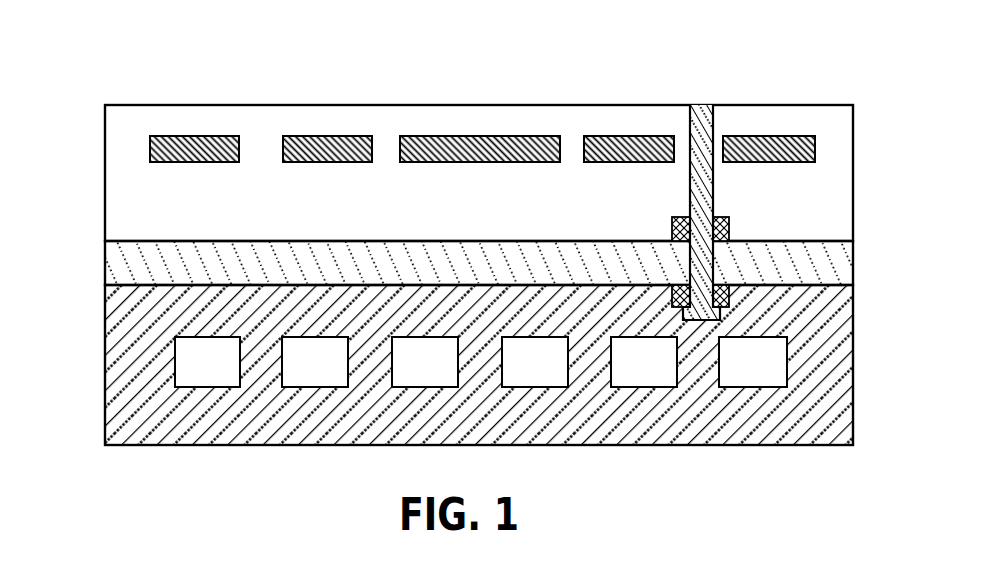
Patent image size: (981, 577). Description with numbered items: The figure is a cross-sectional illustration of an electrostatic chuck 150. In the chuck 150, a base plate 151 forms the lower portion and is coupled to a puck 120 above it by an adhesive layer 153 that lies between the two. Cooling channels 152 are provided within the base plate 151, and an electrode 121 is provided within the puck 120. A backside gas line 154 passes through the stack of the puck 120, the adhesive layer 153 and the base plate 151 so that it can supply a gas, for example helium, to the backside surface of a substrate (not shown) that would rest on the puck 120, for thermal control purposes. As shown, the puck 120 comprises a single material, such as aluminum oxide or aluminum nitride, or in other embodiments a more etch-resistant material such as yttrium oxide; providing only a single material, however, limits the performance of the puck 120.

The chuck 150 is at (130, 60).
The puck 120 is at (248, 116).
The electrode 121 is at (327, 147).
The adhesive layer 153 is at (837, 263).
The base plate 151 is at (822, 430).
The cooling channels 152 is at (210, 375).
The backside gas line 154 is at (710, 187).